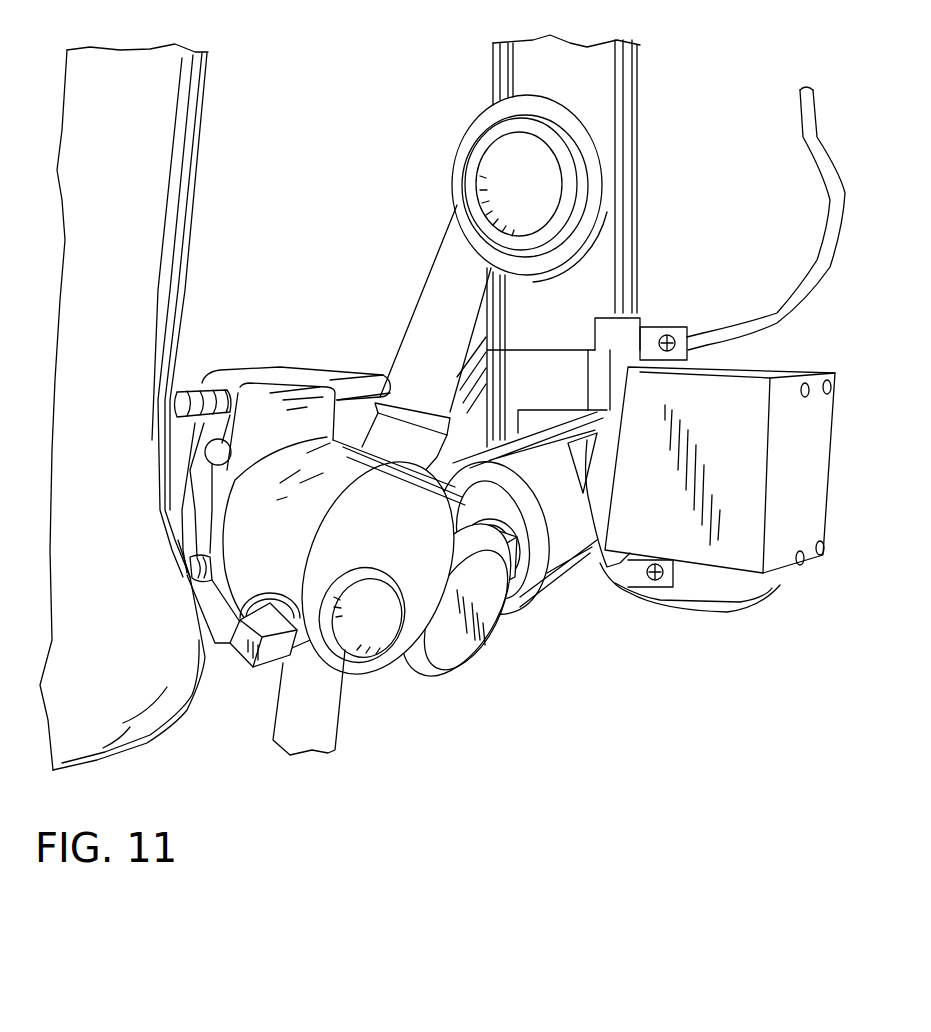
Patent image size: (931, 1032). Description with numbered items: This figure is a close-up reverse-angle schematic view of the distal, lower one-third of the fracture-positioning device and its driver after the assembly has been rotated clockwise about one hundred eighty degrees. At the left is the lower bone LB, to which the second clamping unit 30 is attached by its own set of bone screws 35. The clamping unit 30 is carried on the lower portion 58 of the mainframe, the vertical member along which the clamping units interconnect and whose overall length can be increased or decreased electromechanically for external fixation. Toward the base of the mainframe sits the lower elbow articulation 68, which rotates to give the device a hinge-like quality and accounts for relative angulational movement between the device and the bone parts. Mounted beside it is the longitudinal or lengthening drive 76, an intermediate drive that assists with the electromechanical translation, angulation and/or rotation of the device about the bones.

The lower bone LB is at (124, 365).
The lower portion 58 is at (604, 99).
The bone screws 35 is at (190, 392).
The longitudinal or lengthening drive 76 is at (754, 450).
The lower elbow articulation 68 is at (572, 568).
The second clamping unit 30 is at (428, 675).